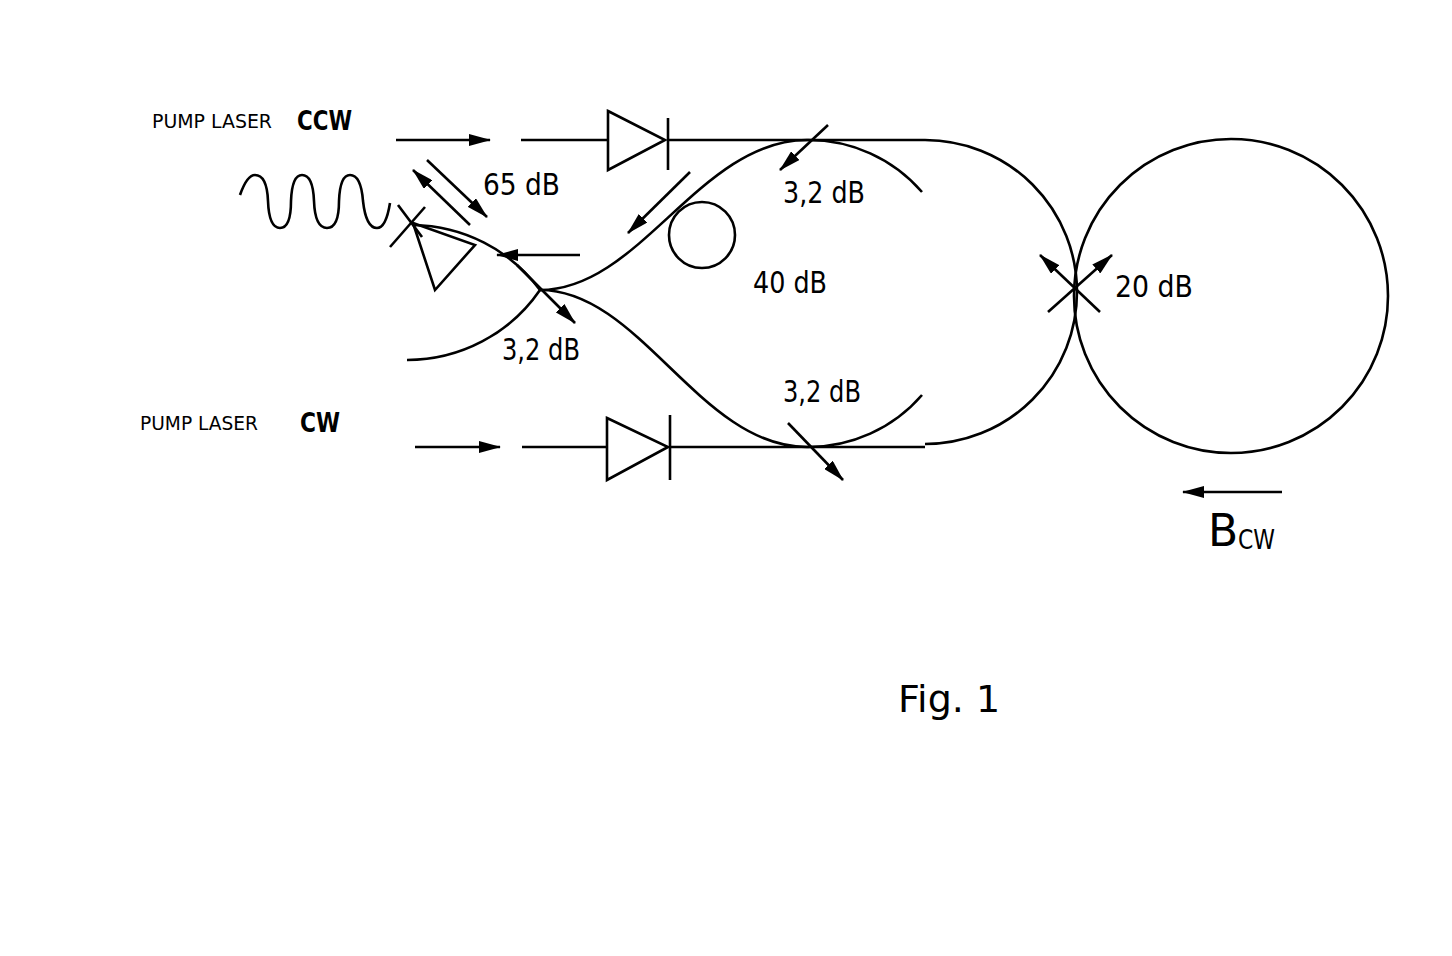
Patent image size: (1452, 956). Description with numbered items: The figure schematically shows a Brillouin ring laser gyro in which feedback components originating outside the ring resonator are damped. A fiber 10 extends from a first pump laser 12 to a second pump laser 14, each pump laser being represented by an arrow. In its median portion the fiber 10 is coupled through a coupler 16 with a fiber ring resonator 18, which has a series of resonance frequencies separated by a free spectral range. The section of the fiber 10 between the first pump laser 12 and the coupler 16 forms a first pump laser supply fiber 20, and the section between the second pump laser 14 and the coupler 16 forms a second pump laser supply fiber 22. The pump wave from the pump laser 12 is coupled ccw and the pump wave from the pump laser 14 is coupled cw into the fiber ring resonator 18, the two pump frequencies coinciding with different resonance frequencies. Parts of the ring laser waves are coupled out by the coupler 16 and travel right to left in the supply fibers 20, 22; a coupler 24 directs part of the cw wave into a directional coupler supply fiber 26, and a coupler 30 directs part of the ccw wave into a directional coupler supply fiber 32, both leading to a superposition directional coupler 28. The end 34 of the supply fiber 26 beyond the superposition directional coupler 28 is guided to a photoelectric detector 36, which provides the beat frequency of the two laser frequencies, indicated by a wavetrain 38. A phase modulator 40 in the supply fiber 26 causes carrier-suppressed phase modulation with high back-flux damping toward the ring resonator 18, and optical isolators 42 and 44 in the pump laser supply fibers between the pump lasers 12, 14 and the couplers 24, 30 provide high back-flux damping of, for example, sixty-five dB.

The fiber 10 is at (1004, 150).
The first pump laser 12 is at (430, 138).
The second pump laser 14 is at (435, 450).
The coupler 16 is at (1072, 290).
The fiber ring resonator 18 is at (1370, 222).
The first pump laser supply fiber 20 is at (752, 140).
The second pump laser supply fiber 22 is at (718, 448).
The coupler 24 is at (825, 142).
The directional coupler supply fiber 26 is at (653, 243).
The superposition directional coupler 28 is at (552, 285).
The coupler 30 is at (803, 450).
The directional coupler supply fiber 32 is at (703, 405).
The end of the directional coupler supply fiber 34 is at (473, 278).
The photoelectric detector 36 is at (428, 255).
The wavetrain 38 is at (265, 205).
The phase modulator 40 is at (735, 232).
The optical isolator 42 is at (632, 137).
The optical isolator 44 is at (627, 458).